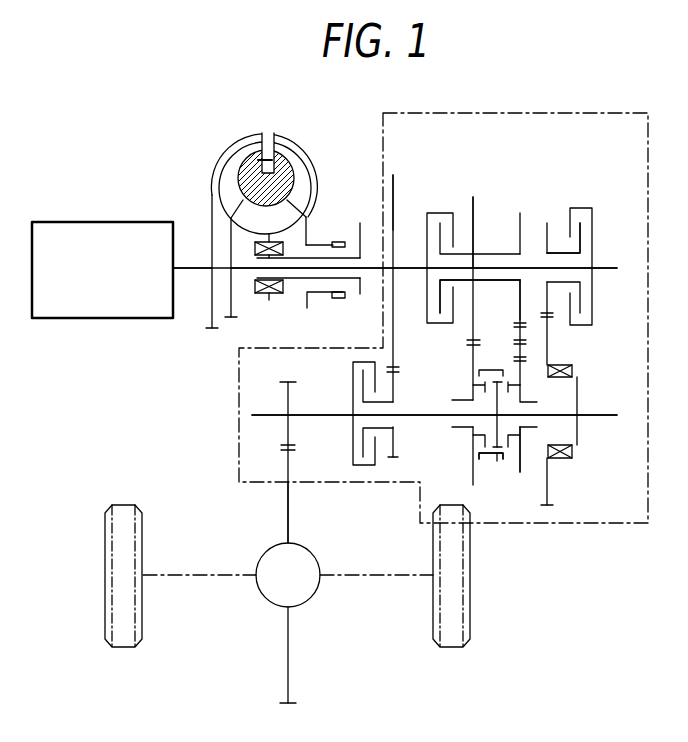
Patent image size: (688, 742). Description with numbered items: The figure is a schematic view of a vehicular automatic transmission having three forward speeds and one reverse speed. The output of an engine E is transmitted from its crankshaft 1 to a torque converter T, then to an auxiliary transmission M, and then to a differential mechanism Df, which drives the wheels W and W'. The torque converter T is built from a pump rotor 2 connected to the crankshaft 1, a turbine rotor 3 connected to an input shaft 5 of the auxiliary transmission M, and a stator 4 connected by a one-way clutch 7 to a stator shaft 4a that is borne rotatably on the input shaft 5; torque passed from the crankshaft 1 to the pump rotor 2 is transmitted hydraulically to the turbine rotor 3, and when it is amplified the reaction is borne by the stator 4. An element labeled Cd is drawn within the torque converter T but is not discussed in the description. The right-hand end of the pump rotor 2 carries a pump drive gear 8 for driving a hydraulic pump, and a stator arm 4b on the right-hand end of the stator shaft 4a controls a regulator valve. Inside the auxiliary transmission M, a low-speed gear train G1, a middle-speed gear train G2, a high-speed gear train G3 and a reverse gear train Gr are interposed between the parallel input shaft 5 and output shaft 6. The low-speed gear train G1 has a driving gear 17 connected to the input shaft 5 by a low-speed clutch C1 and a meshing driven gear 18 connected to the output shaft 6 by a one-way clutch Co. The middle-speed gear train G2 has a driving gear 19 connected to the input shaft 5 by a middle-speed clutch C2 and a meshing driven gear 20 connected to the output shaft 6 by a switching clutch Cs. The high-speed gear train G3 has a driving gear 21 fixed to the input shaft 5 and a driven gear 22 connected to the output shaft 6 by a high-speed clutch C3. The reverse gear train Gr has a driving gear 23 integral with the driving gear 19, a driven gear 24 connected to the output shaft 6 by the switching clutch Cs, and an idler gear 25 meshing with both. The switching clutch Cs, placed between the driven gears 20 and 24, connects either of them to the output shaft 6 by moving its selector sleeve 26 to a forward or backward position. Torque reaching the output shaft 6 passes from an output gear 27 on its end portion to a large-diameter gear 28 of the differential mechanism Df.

The engine E is at (108, 278).
The crankshaft 1 is at (189, 266).
The torque converter T is at (306, 131).
The pump rotor 2 is at (306, 166).
The turbine rotor 3 is at (223, 158).
The direct coupling clutch Cd is at (262, 162).
The stator 4 is at (283, 231).
The stator shaft 4a is at (360, 294).
The stator arm 4b is at (360, 223).
The input shaft 5 is at (372, 266).
The one-way clutch 7 is at (270, 297).
The pump drive gear 8 is at (338, 242).
The auxiliary transmission M is at (607, 110).
The low-speed gear train G1 is at (547, 222).
The middle-speed gear train G2 is at (474, 196).
The high-speed gear train G3 is at (394, 174).
The reverse gear train Gr is at (521, 212).
The low-speed clutch C1 is at (595, 302).
The middle-speed clutch C2 is at (434, 331).
The high-speed clutch C3 is at (350, 387).
The one-way clutch Co is at (575, 370).
The switching clutch Cs is at (497, 467).
The output shaft 6 is at (262, 417).
The driving gear 17 is at (549, 251).
The driven gear 18 is at (548, 488).
The driving gear 19 is at (474, 233).
The driven gear 20 is at (473, 466).
The driving gear 21 is at (393, 220).
The driven gear 22 is at (395, 388).
The driving gear 23 is at (520, 302).
The driven gear 24 is at (521, 472).
The idler gear 25 is at (520, 327).
The selector sleeve 26 is at (490, 456).
The output gear 27 is at (290, 432).
The large-diameter gear 28 is at (290, 515).
The differential mechanism Df is at (320, 558).
The drive wheel W is at (123, 593).
The drive wheel W' is at (451, 595).